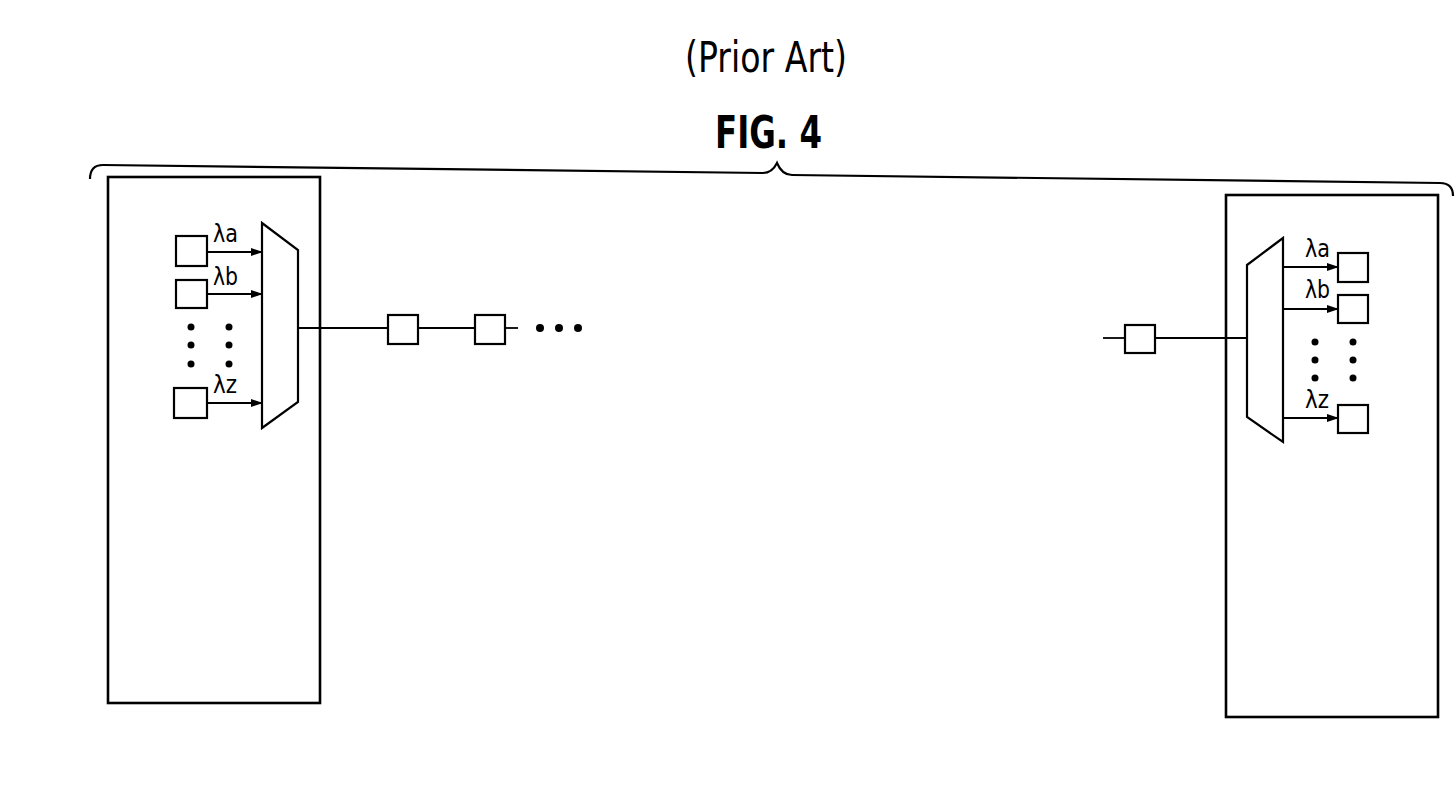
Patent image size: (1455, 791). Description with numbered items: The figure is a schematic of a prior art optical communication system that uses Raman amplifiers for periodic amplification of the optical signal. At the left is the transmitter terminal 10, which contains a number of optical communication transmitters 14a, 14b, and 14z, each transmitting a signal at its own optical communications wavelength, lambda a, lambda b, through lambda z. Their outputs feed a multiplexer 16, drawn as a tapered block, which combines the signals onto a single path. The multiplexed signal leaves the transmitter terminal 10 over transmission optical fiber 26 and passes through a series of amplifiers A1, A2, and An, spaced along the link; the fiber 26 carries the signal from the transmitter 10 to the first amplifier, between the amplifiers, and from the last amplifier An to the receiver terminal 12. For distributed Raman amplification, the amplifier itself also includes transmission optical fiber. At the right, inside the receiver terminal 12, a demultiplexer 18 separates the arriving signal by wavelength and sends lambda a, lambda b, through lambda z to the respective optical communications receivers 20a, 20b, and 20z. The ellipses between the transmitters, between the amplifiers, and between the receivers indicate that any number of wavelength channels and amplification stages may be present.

The transmitter terminal 10 is at (241, 703).
The receiver terminal 12 is at (1298, 717).
The optical communication transmitter 14a is at (176, 242).
The optical communication transmitter 14b is at (176, 286).
The optical communication transmitter 14z is at (174, 394).
The multiplexer 16 is at (298, 249).
The demultiplexer 18 is at (1260, 252).
The optical communications receiver 20a is at (1368, 263).
The optical communications receiver 20b is at (1368, 309).
The optical communications receiver 20z is at (1368, 419).
The transmission optical fiber 26 is at (341, 326).
The amplifier A1 is at (400, 315).
The amplifier A2 is at (488, 315).
The amplifier An is at (1141, 325).